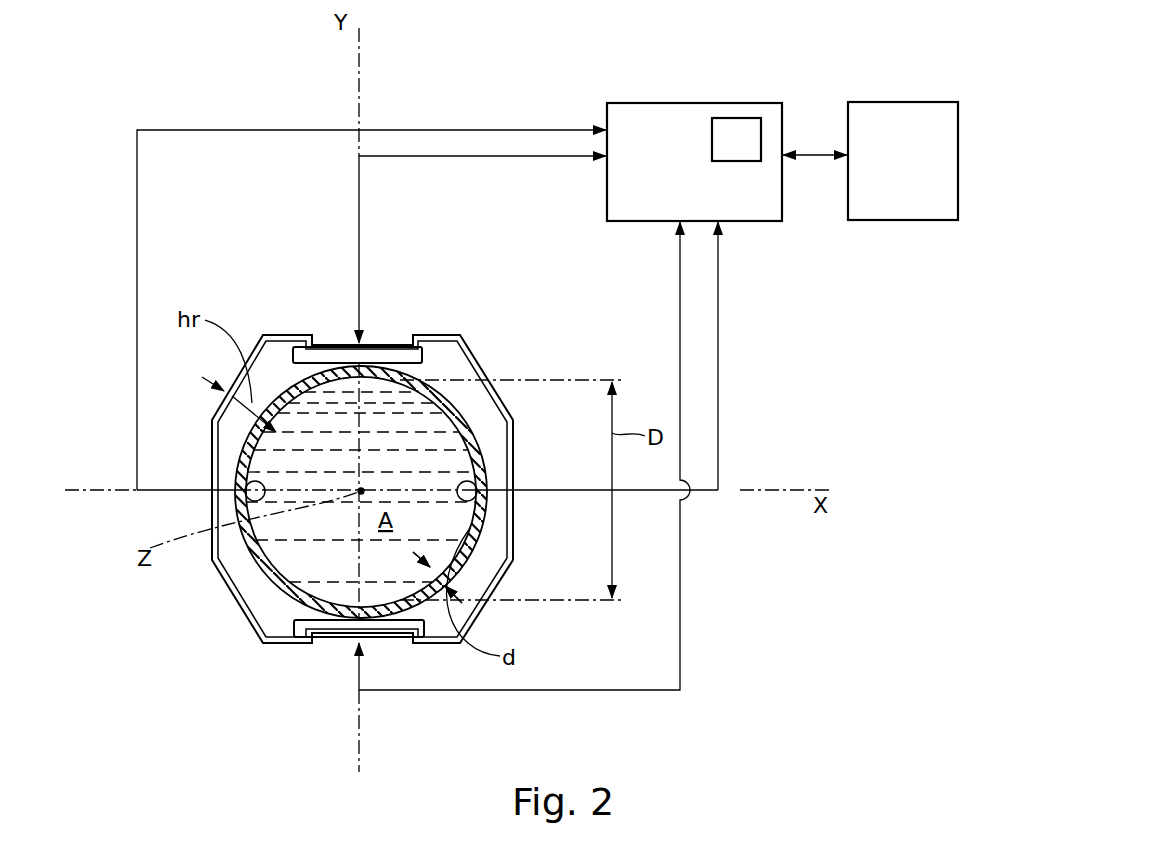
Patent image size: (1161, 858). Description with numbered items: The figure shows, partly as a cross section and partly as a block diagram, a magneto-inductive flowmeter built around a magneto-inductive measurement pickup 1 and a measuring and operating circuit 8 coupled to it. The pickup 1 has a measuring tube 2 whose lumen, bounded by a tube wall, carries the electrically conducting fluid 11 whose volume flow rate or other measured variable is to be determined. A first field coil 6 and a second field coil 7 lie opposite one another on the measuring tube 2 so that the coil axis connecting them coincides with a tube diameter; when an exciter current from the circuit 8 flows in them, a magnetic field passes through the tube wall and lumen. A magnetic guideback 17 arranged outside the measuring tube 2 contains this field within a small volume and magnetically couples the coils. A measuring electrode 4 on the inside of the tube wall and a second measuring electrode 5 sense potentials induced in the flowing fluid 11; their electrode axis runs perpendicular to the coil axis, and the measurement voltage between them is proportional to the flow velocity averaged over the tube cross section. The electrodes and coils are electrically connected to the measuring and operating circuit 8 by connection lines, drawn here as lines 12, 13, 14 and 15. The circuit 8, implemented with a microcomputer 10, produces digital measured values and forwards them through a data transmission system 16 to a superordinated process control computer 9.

The magneto-inductive measurement pickup 1 is at (232, 613).
The measuring tube 2 is at (282, 400).
The measuring electrode 4 is at (472, 484).
The second measuring electrode 5 is at (252, 483).
The first field coil 6 is at (394, 355).
The second field coil 7 is at (322, 630).
The measuring and operating circuit 8 is at (694, 162).
The superordinated process control computer 9 is at (903, 161).
The microcomputer 10 is at (735, 145).
The fluid 11 is at (443, 545).
The signal line 12 is at (718, 348).
The force input line 13 is at (360, 226).
The signal line 14 is at (680, 578).
The signal line 15 is at (137, 330).
The data transmission system 16 is at (815, 150).
The magnetic guideback 17 is at (478, 365).